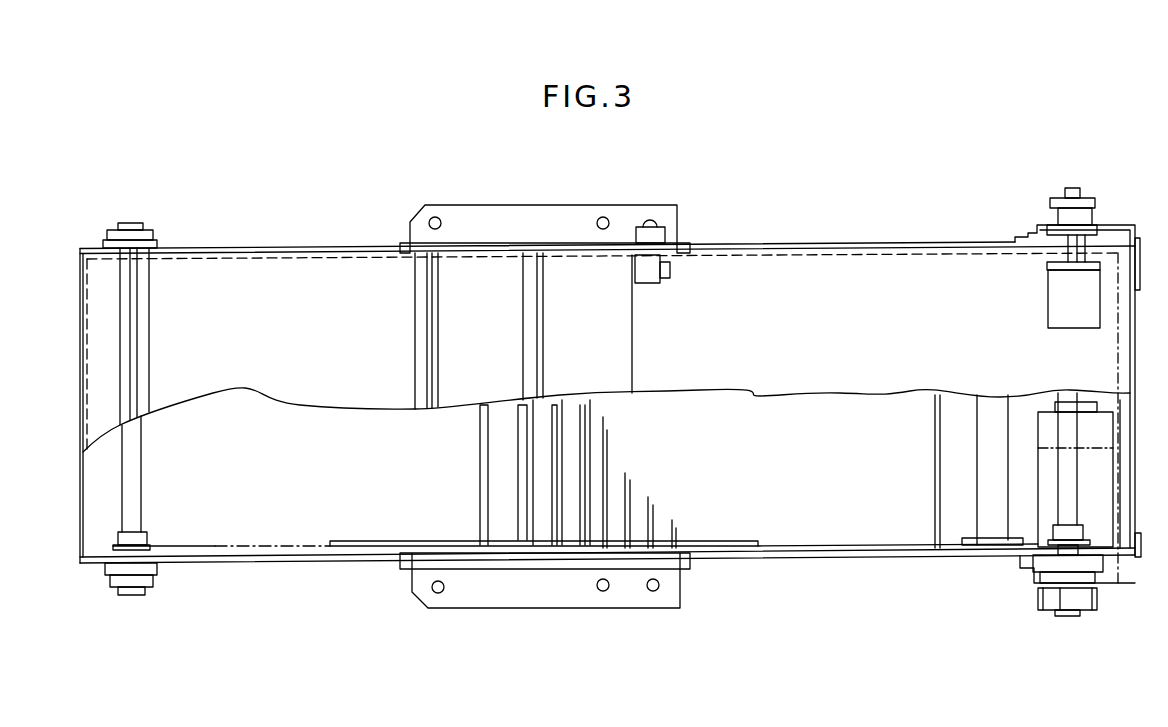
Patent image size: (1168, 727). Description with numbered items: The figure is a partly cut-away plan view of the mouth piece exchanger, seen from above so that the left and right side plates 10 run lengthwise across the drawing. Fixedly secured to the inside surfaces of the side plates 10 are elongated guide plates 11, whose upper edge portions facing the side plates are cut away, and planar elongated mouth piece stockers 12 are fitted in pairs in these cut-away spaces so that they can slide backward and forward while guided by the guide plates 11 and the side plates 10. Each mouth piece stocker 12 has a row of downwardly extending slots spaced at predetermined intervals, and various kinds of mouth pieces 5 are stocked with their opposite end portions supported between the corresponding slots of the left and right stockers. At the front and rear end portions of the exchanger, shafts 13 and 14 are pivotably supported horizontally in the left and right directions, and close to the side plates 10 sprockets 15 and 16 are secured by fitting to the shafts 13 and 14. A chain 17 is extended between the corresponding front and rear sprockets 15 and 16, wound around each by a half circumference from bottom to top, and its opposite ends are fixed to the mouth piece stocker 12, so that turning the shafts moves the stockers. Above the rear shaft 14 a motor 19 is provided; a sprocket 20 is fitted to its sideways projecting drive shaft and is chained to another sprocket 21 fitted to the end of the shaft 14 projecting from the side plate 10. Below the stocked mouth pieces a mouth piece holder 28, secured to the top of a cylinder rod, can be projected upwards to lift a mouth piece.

The side plate 10 is at (750, 243).
The mouth piece 5 is at (560, 512).
The mouth piece holder 28 is at (522, 440).
The shaft 13 is at (135, 475).
The sprocket 15 is at (148, 545).
The chain 17 is at (267, 545).
The guide plate 11 is at (720, 541).
The mouth piece stocker 12 is at (802, 545).
The shaft 14 is at (1068, 433).
The sprocket 16 is at (1053, 540).
The motor 19 is at (1126, 480).
The sprocket 20 is at (1086, 612).
The sprocket 21 is at (1046, 612).